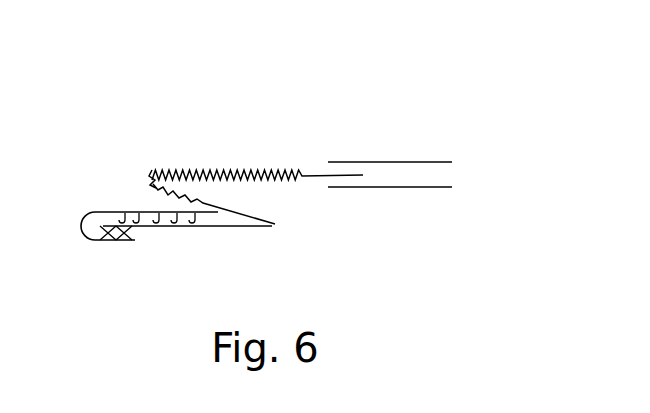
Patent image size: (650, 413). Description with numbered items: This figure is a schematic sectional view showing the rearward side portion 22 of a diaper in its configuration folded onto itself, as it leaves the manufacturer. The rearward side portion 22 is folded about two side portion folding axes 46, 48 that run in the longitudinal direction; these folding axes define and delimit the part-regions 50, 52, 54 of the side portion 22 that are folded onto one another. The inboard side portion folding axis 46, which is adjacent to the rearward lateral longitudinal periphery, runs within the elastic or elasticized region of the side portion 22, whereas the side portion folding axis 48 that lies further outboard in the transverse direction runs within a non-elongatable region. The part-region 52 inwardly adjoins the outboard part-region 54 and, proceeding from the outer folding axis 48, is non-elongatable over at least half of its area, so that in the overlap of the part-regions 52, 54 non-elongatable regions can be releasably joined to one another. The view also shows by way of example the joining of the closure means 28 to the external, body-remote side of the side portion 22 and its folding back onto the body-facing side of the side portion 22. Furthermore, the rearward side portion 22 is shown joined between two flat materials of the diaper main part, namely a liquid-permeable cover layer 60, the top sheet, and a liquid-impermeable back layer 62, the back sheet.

The rearward side portion 22 is at (140, 124).
The closure means 28 is at (97, 210).
The inboard side portion folding axis 46 is at (153, 168).
The outer side portion folding axis 48 is at (255, 217).
The part-region 50 is at (232, 168).
The part-region 52 is at (254, 216).
The outboard part-region 54 is at (212, 227).
The liquid-permeable cover layer 60 is at (389, 162).
The liquid-impermeable back layer 62 is at (410, 188).